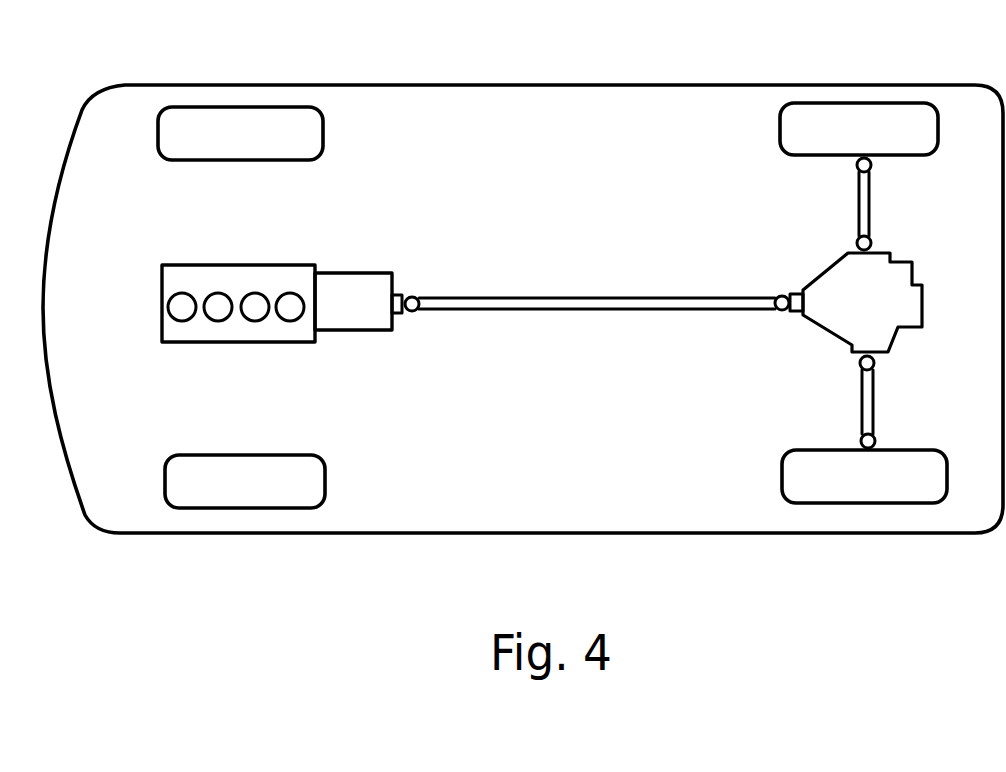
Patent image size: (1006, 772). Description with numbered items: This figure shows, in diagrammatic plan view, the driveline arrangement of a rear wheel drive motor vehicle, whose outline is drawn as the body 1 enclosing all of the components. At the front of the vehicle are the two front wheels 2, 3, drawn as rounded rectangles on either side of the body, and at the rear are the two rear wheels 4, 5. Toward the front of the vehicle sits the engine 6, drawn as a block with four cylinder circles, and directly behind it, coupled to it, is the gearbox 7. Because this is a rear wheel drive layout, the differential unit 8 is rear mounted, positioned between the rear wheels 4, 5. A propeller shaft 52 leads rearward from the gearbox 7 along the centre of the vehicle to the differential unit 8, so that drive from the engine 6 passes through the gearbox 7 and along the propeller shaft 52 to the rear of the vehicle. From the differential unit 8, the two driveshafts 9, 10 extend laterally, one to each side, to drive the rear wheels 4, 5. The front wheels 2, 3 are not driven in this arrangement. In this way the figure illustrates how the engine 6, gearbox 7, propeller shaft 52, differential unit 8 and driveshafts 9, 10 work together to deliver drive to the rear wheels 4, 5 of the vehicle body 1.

The vehicle body 1 is at (533, 507).
The front wheel 2 is at (252, 132).
The front wheel 3 is at (247, 490).
The rear wheel 4 is at (867, 127).
The rear wheel 5 is at (867, 487).
The engine 6 is at (227, 277).
The gearbox 7 is at (355, 300).
The differential unit 8 is at (837, 290).
The driveshaft 9 is at (863, 208).
The driveshaft 10 is at (868, 372).
The propeller shaft 52 is at (583, 303).